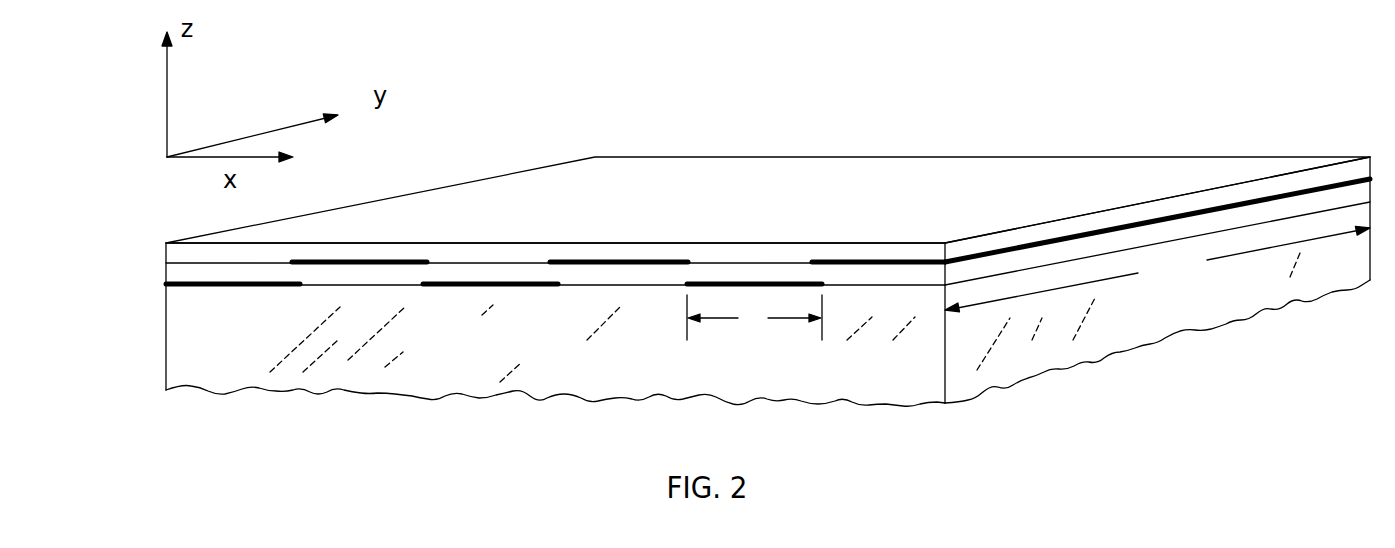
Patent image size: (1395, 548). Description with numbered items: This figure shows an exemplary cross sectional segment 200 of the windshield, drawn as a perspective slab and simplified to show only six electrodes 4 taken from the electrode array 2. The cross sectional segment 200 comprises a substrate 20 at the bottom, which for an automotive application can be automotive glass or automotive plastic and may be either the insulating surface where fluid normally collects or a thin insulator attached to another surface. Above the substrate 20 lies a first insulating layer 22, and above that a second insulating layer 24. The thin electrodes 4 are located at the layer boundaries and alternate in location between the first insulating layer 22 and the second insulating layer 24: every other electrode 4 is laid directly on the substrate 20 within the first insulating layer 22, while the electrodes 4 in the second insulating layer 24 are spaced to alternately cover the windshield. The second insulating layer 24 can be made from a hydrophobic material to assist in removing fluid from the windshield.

The cross sectional segment 200 is at (534, 130).
The electrode array 2 is at (622, 200).
The second insulating layer 24 is at (762, 252).
The first insulating layer 22 is at (457, 275).
The electrodes 4 is at (240, 287).
The substrate 20 is at (210, 327).